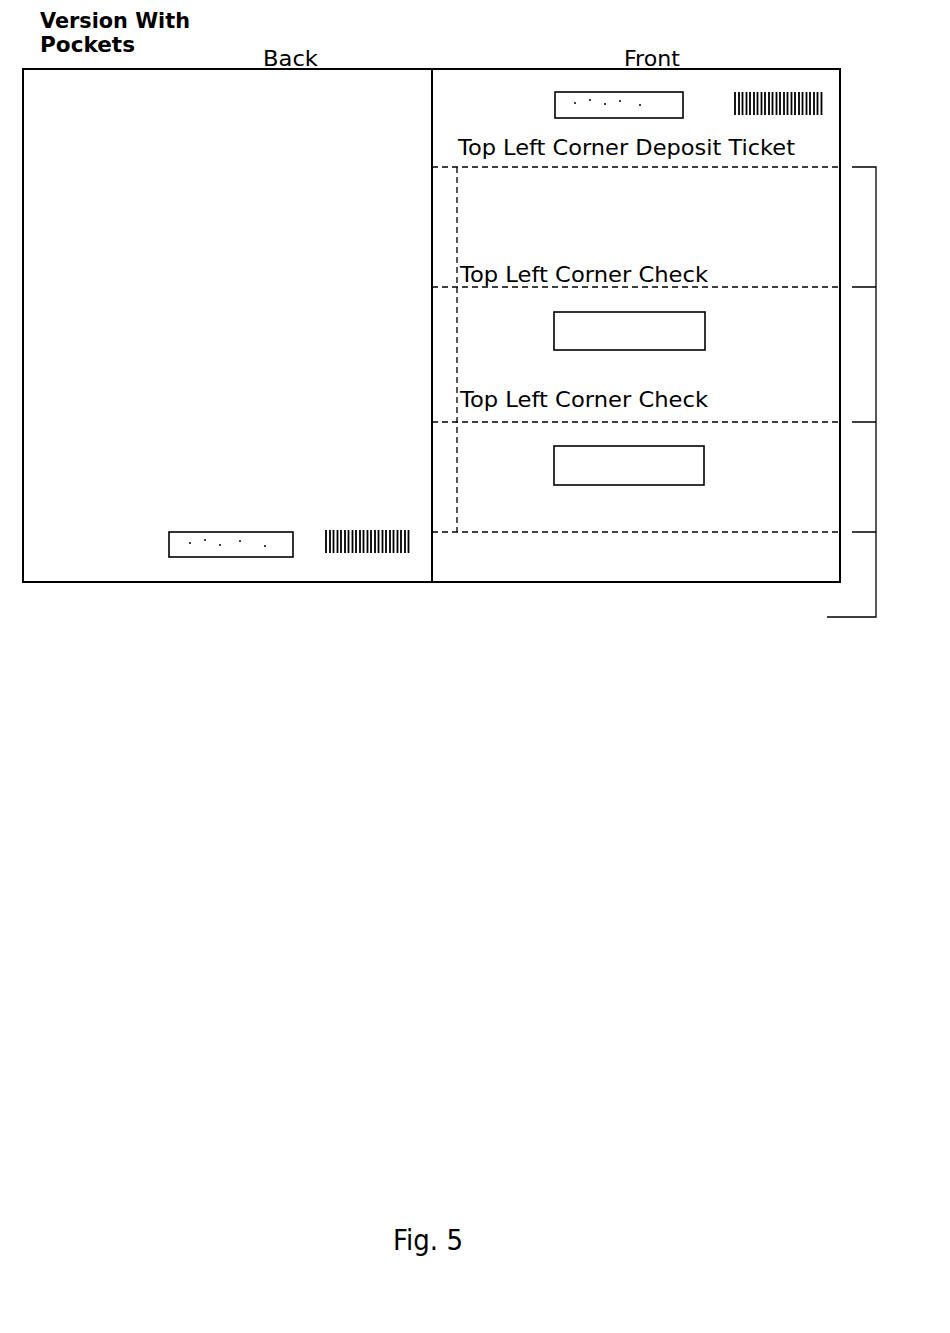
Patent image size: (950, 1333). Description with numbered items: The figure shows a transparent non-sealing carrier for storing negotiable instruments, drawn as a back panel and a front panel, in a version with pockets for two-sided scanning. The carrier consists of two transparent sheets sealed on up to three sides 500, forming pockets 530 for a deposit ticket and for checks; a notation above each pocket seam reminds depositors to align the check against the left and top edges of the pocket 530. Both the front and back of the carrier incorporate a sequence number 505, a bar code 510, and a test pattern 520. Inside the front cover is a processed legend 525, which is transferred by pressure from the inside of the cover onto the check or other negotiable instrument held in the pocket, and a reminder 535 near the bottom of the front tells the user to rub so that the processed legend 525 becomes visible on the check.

The transparent sheets sealed on up to three sides 500 is at (383, 67).
The sequence number 505 is at (495, 80).
The bar code 510 is at (793, 80).
The test pattern 520 is at (607, 80).
The processed legend 525 is at (554, 362).
The pocket 530 is at (455, 545).
The reminder to rub to transfer the processed legend 535 is at (717, 562).